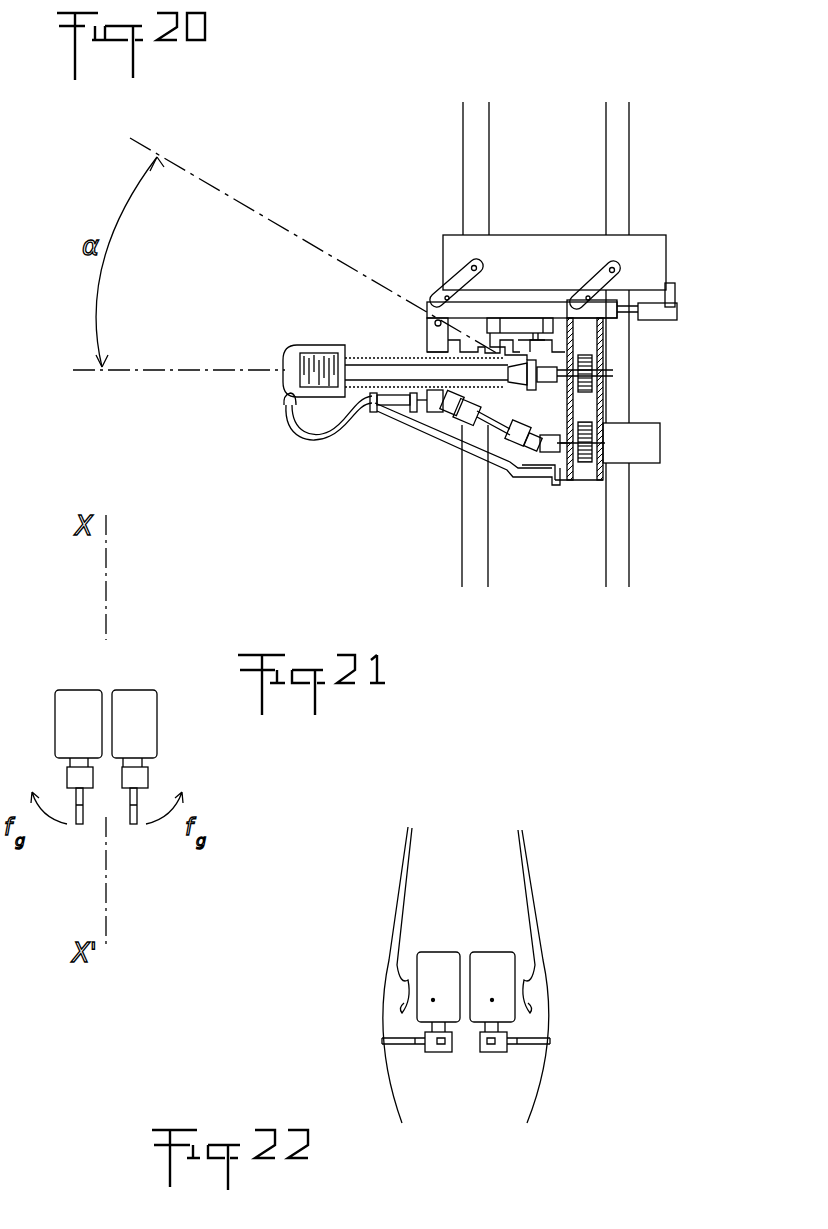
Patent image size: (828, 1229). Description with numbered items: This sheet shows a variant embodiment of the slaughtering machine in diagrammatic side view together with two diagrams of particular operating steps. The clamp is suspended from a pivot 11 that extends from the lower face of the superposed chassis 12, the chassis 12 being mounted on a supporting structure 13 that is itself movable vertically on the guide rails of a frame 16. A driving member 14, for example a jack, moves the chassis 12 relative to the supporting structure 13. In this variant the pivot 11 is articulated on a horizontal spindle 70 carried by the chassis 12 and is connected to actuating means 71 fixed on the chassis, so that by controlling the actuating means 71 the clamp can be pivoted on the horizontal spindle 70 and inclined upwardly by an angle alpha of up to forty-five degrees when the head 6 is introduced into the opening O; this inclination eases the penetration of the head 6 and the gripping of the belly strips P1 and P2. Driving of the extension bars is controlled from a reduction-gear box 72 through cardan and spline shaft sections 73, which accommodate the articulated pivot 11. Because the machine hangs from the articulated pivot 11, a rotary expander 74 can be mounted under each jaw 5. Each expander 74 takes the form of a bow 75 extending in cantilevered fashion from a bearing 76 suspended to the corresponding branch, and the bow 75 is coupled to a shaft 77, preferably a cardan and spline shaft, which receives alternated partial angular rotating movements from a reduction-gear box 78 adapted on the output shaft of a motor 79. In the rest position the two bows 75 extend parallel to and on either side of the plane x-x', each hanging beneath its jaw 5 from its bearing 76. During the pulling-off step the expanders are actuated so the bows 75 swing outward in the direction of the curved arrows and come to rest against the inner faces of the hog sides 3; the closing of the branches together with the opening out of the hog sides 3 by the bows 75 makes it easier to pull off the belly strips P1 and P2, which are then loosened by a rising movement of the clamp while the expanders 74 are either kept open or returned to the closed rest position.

In FIG. 22, the hog sides 3 is at (568, 1000).
In FIG. 20, the jaw 5 is at (283, 373).
In FIG. 21, the jaw 5 is at (152, 692).
In FIG. 22, the jaw 5 is at (466, 987).
In FIG. 20, the head 6 is at (276, 344).
In FIG. 21, the head 6 is at (110, 675).
In FIG. 22, the head 6 is at (469, 941).
In FIG. 20, the pivot 11 is at (425, 343).
In FIG. 20, the chassis 12 is at (578, 300).
In FIG. 20, the supporting structure 13 is at (648, 235).
In FIG. 20, the driving member 14 is at (680, 312).
In FIG. 20, the frame 16 is at (624, 147).
In FIG. 20, the horizontal spindle 70 is at (434, 323).
In FIG. 20, the actuating means 71 is at (520, 318).
In FIG. 20, the reduction-gear box 72 is at (610, 354).
In FIG. 20, the cardan and spline shaft sections 73 is at (528, 386).
In FIG. 20, the rotary expander 74 is at (282, 414).
In FIG. 21, the rotary expander 74 is at (130, 846).
In FIG. 20, the bow 75 is at (320, 432).
In FIG. 21, the bow 75 is at (136, 827).
In FIG. 22, the bow 75 is at (522, 1046).
In FIG. 20, the bearing 76 is at (385, 412).
In FIG. 21, the bearing 76 is at (148, 777).
In FIG. 20, the shaft 77 is at (493, 432).
In FIG. 20, the reduction-gear box 78 is at (586, 480).
In FIG. 20, the motor 79 is at (650, 455).
In FIG. 22, the belly strip P1 is at (422, 858).
In FIG. 22, the belly strip P2 is at (512, 858).
In FIG. 22, the opening O is at (412, 1102).